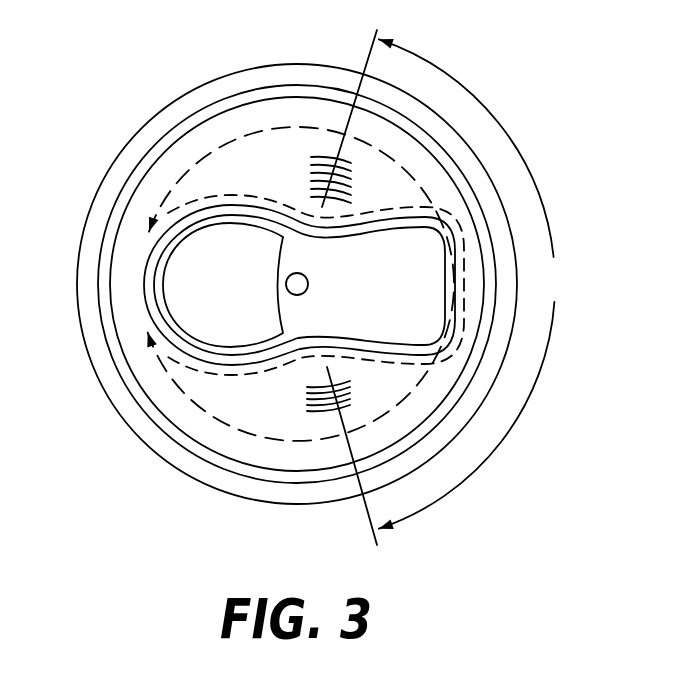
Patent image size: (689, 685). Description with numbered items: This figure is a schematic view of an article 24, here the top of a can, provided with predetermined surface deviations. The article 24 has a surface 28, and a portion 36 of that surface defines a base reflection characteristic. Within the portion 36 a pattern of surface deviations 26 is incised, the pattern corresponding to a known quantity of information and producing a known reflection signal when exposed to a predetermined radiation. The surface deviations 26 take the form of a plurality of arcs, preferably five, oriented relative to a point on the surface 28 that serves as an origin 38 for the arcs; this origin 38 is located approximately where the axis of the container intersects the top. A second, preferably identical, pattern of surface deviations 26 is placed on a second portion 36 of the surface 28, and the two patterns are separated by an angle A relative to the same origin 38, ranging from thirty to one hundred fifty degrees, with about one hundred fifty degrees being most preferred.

The article 24 is at (310, 110).
The surface deviations 26 is at (307, 424).
The surface 28 is at (182, 160).
The portion 36 is at (276, 114).
The origin 38 is at (303, 282).
The angle of separation A is at (470, 284).